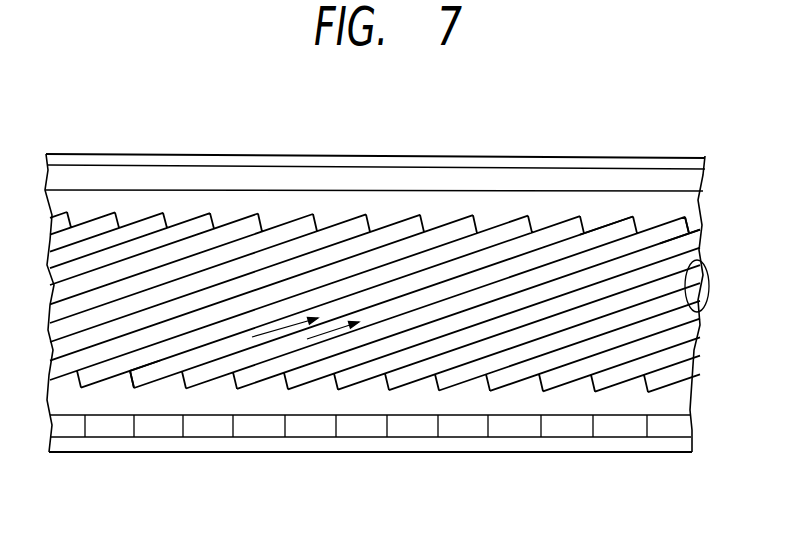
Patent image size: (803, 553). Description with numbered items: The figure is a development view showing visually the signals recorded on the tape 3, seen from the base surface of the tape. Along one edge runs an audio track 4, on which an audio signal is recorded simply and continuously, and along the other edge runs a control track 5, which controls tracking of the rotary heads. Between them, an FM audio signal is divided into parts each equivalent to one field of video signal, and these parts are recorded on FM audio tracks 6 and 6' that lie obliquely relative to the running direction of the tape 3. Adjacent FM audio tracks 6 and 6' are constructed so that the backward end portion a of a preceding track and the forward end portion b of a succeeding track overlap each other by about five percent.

The tape 3 is at (129, 132).
The audio track 4 is at (625, 175).
The control track 5 is at (415, 430).
The FM audio track 6 is at (398, 302).
The FM audio track 6' is at (703, 212).
The backward end portion a is at (618, 228).
The forward end portion b is at (153, 375).